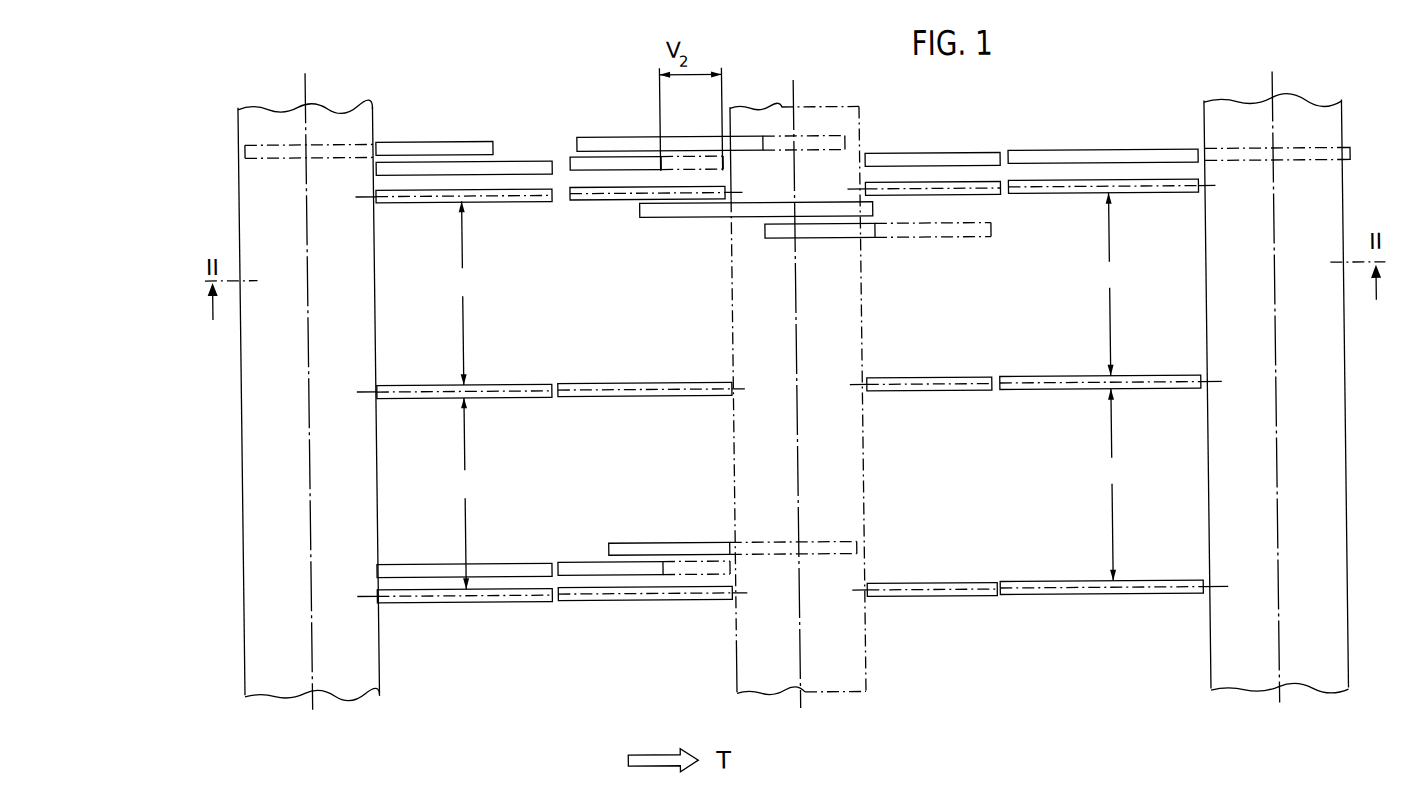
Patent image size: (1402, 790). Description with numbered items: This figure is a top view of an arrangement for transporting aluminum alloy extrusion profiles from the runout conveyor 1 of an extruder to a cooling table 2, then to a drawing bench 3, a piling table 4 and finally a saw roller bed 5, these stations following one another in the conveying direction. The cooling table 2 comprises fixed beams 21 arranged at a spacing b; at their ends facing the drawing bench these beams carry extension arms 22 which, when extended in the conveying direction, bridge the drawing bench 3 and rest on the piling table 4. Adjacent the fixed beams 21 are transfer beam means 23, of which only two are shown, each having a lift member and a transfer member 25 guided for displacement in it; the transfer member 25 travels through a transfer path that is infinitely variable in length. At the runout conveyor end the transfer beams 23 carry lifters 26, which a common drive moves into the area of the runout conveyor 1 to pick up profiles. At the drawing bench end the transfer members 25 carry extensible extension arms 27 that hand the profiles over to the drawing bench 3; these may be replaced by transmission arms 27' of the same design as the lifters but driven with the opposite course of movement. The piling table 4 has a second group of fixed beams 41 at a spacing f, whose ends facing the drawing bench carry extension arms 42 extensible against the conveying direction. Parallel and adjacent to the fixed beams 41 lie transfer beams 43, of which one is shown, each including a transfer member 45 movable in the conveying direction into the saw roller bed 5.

The runout conveyor 1 is at (378, 710).
The cooling table 2 is at (714, 710).
The drawing bench 3 is at (733, 708).
The piling table 4 is at (1193, 708).
The saw roller bed 5 is at (1343, 704).
The fixed beams 21 is at (426, 202).
The extension arms 22 is at (682, 215).
The transfer beam means 23 is at (528, 163).
The transfer member 25 is at (680, 157).
The lifters 26 is at (423, 150).
The extension arms 27 is at (709, 116).
The transmission arms 27' is at (732, 519).
The fixed beams 41 is at (1038, 198).
The extension arms 42 is at (838, 238).
The transfer beams 43 is at (1049, 157).
The transfer member 45 is at (1228, 151).